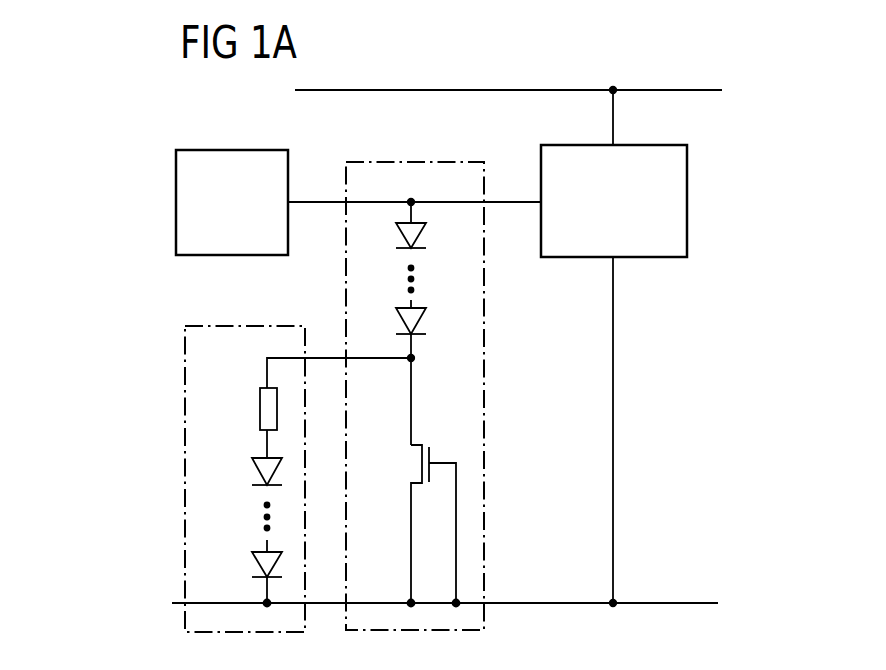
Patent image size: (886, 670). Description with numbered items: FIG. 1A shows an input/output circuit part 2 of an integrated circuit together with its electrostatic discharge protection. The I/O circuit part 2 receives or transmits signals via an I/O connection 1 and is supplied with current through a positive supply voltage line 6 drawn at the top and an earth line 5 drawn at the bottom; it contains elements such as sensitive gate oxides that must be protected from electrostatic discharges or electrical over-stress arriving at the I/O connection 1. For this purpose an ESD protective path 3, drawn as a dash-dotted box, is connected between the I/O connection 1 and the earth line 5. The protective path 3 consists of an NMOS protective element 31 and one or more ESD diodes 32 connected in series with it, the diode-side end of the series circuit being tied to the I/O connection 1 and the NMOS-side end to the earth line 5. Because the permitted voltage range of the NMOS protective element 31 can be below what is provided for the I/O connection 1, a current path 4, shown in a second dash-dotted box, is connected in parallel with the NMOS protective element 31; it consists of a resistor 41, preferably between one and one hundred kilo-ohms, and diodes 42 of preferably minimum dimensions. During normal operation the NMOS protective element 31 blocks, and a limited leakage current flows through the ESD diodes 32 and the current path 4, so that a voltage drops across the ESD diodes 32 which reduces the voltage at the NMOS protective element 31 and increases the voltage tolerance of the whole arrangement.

The I/O connection 1 is at (176, 206).
The I/O circuit part 2 is at (687, 197).
The ESD protective path 3 is at (484, 367).
The current path 4 is at (185, 354).
The earth line 5 is at (665, 603).
The positive supply voltage line 6 is at (672, 90).
The NMOS protective element 31 is at (422, 463).
The ESD diodes 32 is at (425, 235).
The resistor 41 is at (260, 412).
The diodes 42 is at (255, 478).